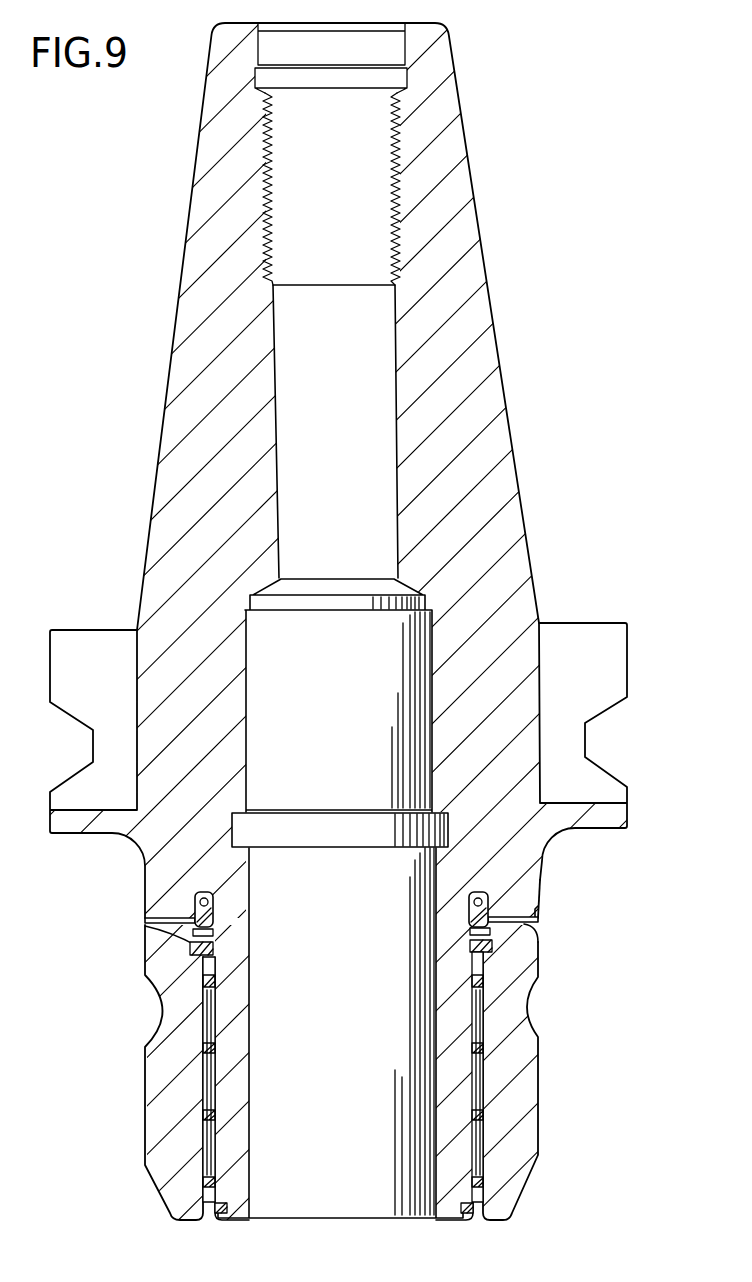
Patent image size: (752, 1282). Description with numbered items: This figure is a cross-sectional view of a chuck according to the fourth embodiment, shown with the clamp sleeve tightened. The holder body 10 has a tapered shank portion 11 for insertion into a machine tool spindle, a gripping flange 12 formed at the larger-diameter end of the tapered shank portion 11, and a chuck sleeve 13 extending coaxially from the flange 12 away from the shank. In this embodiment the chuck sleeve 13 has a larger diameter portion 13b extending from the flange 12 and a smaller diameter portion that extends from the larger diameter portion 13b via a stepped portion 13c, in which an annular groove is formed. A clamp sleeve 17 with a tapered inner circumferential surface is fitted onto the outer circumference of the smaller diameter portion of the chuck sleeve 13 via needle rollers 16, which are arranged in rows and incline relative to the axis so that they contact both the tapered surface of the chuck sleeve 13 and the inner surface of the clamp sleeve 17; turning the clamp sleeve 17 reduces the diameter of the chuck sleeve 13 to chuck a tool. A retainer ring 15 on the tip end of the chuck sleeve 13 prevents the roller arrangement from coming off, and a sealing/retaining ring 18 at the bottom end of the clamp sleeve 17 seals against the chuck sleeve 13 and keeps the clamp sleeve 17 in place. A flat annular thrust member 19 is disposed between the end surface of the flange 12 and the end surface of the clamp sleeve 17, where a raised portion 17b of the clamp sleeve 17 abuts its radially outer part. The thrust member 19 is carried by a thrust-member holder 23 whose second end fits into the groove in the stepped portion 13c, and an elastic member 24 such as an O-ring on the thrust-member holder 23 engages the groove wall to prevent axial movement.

The holder body 10 is at (590, 335).
The tapered shank portion 11 is at (497, 503).
The gripping flange 12 is at (580, 630).
The chuck sleeve 13 is at (450, 1017).
The larger diameter portion 13b is at (535, 910).
The stepped portion 13c is at (523, 925).
The retainer ring 15 is at (208, 1207).
The needle rollers 16 is at (487, 1077).
The clamp sleeve 17 is at (533, 1157).
The raised portion 17b is at (146, 941).
The sealing/retaining ring 18 is at (144, 958).
The thrust member 19 is at (537, 893).
The thrust-member holder 23 is at (487, 900).
The elastic member 24 is at (492, 912).